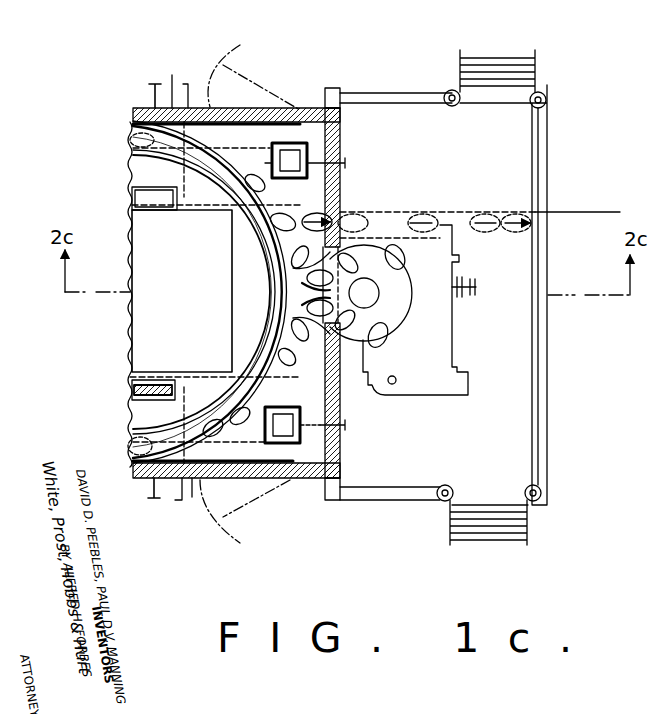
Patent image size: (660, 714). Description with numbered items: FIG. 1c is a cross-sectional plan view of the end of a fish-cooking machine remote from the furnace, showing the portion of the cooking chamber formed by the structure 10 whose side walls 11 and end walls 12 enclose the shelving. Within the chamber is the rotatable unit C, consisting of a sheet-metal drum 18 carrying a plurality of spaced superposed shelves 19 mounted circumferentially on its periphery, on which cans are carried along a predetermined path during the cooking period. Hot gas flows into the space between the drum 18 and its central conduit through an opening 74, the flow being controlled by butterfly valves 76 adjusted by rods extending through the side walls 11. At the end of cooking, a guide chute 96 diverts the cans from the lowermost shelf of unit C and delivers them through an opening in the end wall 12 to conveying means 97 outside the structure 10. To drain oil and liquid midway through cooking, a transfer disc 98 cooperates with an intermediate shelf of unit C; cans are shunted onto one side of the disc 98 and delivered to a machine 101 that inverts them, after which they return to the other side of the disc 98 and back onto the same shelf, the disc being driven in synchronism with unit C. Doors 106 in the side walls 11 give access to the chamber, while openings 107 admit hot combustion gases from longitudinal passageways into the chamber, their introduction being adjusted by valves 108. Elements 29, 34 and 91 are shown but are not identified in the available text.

The structure 10 is at (122, 464).
The side walls 11 is at (190, 504).
The end walls 12 is at (341, 130).
The drum 18 is at (297, 253).
The shelves 19 is at (296, 270).
The bolt 29 is at (151, 82).
The piston ellipse 34 is at (130, 139).
The opening 74 is at (143, 210).
The butterfly valves 76 is at (165, 203).
The throat passage 91 is at (302, 288).
The guide chute 96 is at (312, 208).
The conveying means 97 is at (401, 212).
The transfer disc 98 is at (400, 290).
The machine 101 is at (455, 325).
The doors 106 is at (221, 109).
The openings 107 is at (273, 152).
The valves 108 is at (285, 157).
The unit C is at (128, 172).